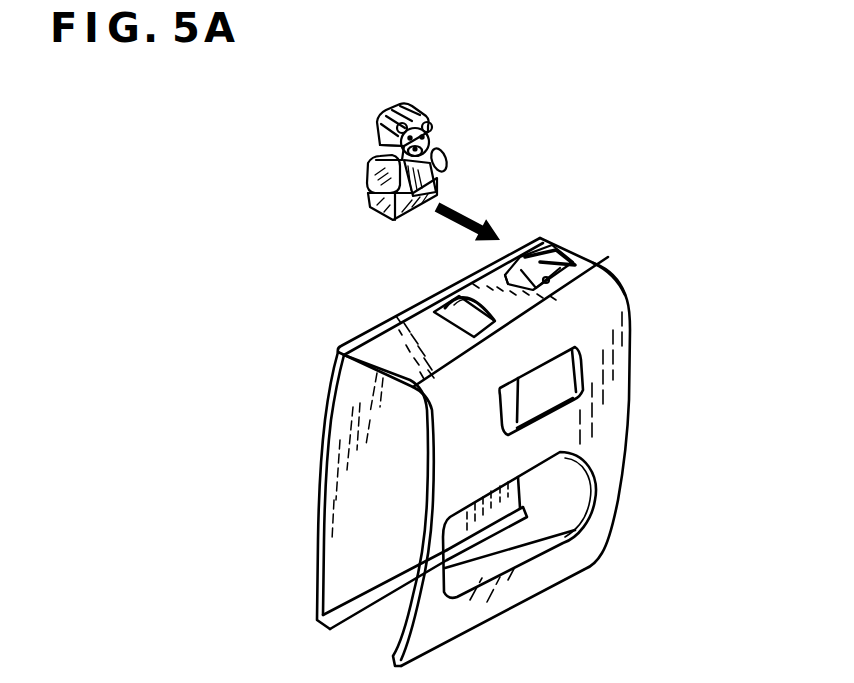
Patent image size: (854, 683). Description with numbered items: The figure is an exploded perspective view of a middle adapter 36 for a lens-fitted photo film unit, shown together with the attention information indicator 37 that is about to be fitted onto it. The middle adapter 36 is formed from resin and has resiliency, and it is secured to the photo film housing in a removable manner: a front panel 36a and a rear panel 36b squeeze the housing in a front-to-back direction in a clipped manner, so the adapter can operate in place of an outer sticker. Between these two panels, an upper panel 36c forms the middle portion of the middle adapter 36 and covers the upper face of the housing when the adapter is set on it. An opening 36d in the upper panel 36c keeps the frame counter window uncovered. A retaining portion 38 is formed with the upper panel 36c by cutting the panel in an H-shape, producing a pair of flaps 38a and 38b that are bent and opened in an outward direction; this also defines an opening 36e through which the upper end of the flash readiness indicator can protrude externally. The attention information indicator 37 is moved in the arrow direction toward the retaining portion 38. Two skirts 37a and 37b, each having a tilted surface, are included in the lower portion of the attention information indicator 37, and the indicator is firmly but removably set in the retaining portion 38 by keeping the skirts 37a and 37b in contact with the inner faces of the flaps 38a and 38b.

The middle adapter 36 is at (380, 322).
The front panel 36a is at (613, 414).
The rear panel 36b is at (333, 455).
The upper panel 36c is at (358, 339).
The opening 36d is at (455, 307).
The opening 36e is at (562, 280).
The attention information indicator 37 is at (460, 142).
The skirt 37a is at (370, 203).
The skirt 37b is at (440, 185).
The retaining portion 38 is at (673, 187).
The flap 38a is at (553, 250).
The flap 38b is at (597, 265).